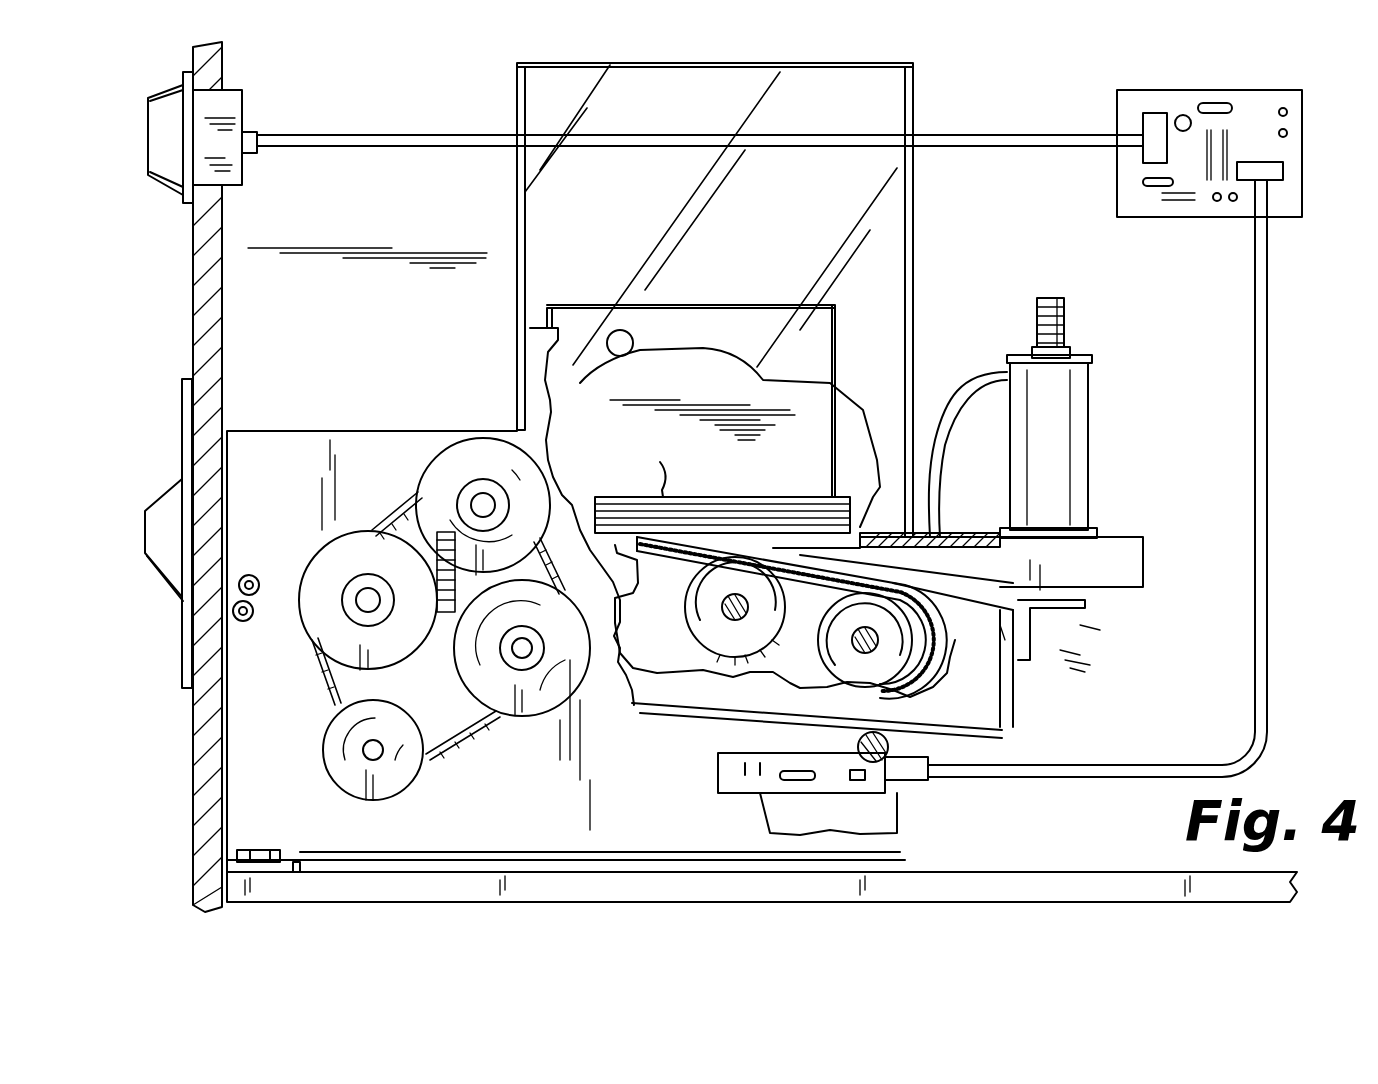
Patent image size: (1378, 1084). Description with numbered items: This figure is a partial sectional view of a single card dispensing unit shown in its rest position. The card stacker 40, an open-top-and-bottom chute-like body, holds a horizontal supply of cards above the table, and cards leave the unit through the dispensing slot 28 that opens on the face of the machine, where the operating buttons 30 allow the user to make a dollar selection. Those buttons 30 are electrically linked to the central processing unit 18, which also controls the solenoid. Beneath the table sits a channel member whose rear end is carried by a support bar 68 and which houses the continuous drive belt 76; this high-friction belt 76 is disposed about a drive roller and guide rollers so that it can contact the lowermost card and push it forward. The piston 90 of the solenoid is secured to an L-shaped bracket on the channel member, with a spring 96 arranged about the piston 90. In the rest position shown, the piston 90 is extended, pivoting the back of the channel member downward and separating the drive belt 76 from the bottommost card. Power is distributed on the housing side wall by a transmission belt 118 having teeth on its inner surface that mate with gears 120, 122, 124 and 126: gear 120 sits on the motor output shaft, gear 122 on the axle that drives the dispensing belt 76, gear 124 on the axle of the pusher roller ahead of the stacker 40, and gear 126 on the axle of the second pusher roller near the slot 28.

The central processing unit 18 is at (1187, 224).
The dispensing slot 28 is at (145, 540).
The operating buttons 30 is at (148, 148).
The card stacker 40 is at (933, 262).
The support bar 68 is at (880, 645).
The drive belt 76 is at (958, 688).
The piston 90 is at (1092, 420).
The spring 96 is at (1072, 600).
The transmission belt 118 is at (458, 748).
The gear 120 is at (338, 775).
The gear 122 is at (556, 700).
The gear 124 is at (460, 458).
The gear 126 is at (322, 628).